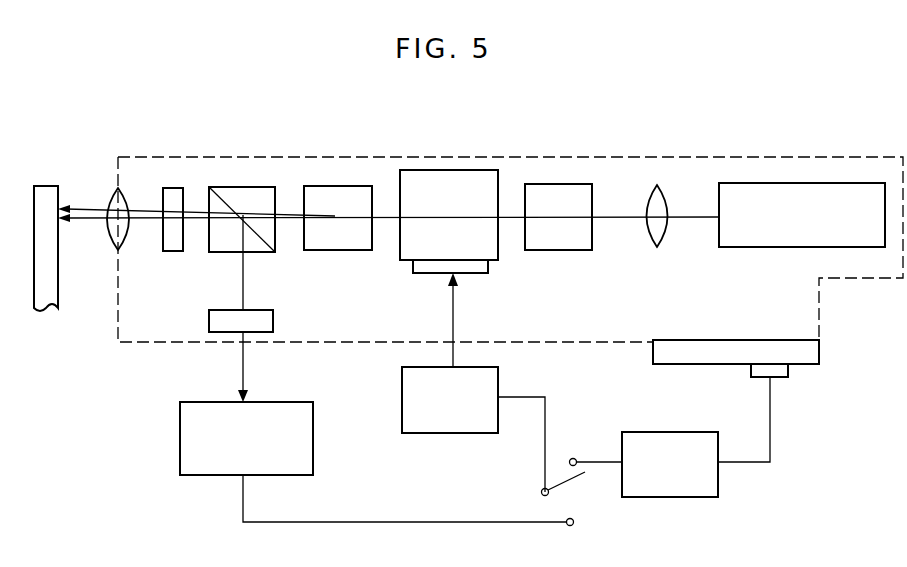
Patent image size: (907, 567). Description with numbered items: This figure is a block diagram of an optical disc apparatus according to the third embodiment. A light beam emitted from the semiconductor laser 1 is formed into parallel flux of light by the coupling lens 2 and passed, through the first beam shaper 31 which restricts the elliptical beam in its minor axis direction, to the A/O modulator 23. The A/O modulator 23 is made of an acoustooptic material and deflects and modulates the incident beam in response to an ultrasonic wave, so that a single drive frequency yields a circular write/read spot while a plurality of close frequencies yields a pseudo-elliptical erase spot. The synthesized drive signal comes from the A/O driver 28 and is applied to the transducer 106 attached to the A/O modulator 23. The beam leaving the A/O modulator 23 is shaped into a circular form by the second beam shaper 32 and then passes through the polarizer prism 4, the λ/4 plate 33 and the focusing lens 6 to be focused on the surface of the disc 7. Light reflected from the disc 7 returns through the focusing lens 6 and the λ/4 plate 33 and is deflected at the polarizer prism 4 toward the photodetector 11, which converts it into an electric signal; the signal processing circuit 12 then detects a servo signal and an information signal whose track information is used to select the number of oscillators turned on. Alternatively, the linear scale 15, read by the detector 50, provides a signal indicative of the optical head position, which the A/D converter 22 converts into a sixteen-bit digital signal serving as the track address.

The semiconductor laser 1 is at (762, 183).
The coupling lens 2 is at (657, 185).
The polarizer prism 4 is at (243, 187).
The focusing lens 6 is at (108, 190).
The disc 7 is at (45, 309).
The photodetector 11 is at (273, 321).
The signal processing circuit 12 is at (180, 435).
The linear scale 15 is at (819, 352).
The A/D converter 22 is at (680, 432).
The A/O modulator 23 is at (452, 170).
The A/O driver 28 is at (445, 433).
The first beam shaper 31 is at (560, 184).
The second beam shaper 32 is at (338, 186).
The λ/4 plate 33 is at (173, 188).
The detector 50 is at (788, 370).
The transducer 106 is at (477, 286).